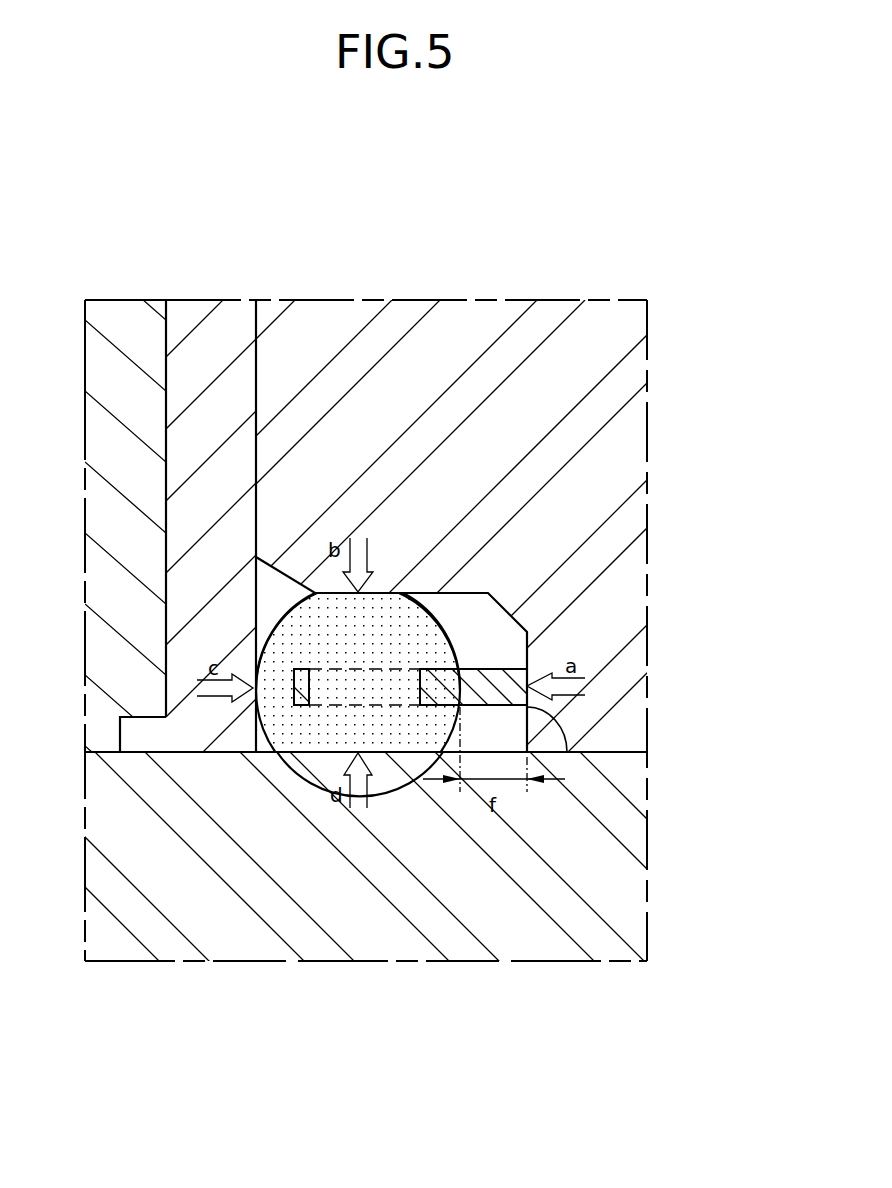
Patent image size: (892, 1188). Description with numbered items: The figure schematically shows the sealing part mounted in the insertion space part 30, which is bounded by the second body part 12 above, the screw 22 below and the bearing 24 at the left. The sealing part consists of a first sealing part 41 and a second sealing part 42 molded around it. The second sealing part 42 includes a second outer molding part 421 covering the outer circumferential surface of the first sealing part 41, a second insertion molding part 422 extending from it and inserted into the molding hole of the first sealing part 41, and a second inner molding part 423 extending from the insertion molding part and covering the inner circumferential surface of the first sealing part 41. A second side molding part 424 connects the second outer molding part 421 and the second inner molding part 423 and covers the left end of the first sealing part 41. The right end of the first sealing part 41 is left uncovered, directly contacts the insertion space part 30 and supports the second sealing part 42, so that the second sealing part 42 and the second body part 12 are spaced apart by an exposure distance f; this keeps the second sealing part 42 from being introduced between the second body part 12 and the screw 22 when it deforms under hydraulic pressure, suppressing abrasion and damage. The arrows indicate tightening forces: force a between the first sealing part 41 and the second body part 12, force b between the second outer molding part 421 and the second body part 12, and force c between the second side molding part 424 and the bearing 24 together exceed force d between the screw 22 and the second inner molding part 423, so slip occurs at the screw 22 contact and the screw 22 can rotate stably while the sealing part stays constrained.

The second body part 12 is at (446, 530).
The screw 22 is at (230, 937).
The bearing 24 is at (213, 335).
The insertion space part 30 is at (468, 594).
The first sealing part 41 is at (530, 653).
The second sealing part 42 is at (523, 757).
The second outer molding part 421 is at (443, 622).
The second insertion molding part 422 is at (390, 687).
The second inner molding part 423 is at (363, 727).
The second side molding part 424 is at (277, 690).